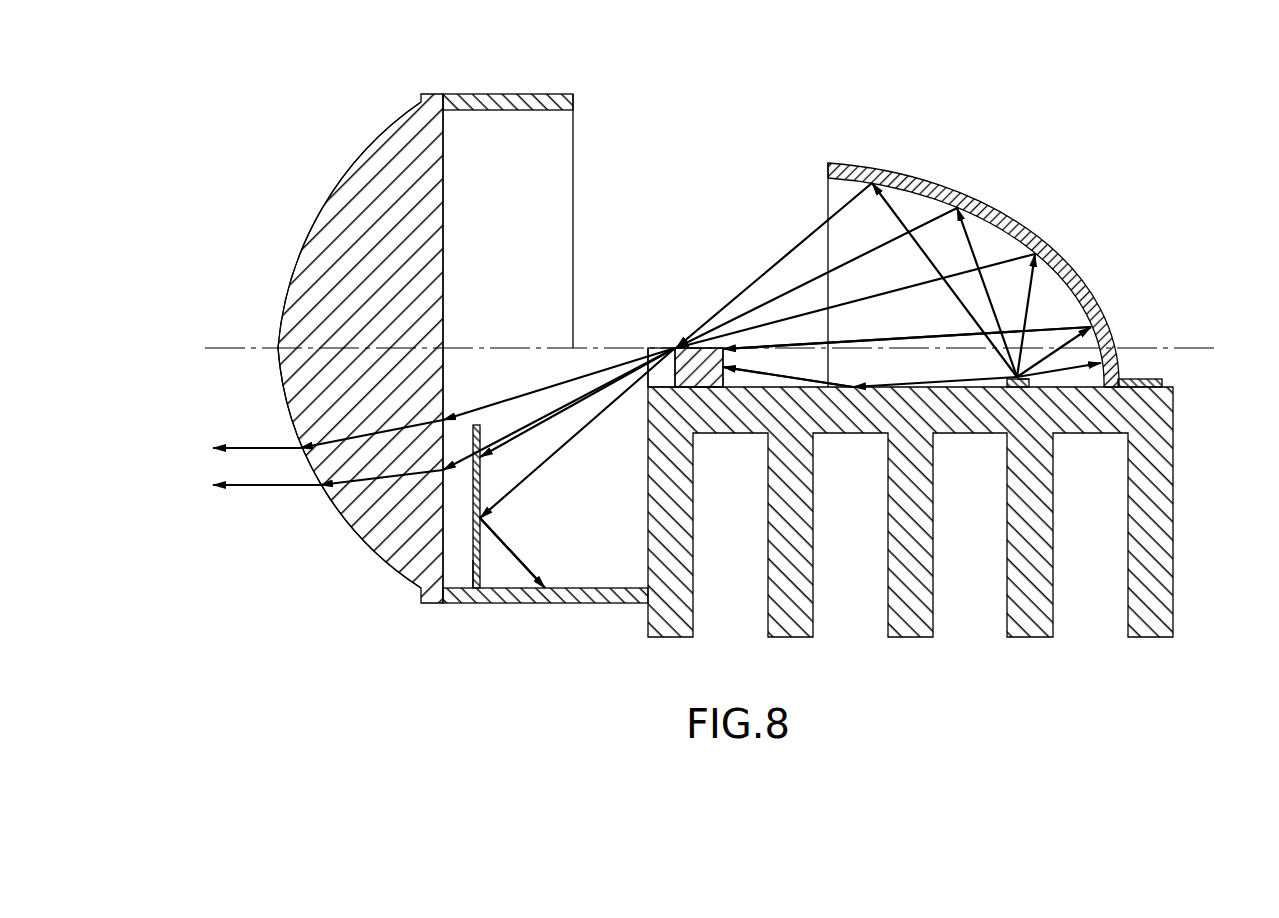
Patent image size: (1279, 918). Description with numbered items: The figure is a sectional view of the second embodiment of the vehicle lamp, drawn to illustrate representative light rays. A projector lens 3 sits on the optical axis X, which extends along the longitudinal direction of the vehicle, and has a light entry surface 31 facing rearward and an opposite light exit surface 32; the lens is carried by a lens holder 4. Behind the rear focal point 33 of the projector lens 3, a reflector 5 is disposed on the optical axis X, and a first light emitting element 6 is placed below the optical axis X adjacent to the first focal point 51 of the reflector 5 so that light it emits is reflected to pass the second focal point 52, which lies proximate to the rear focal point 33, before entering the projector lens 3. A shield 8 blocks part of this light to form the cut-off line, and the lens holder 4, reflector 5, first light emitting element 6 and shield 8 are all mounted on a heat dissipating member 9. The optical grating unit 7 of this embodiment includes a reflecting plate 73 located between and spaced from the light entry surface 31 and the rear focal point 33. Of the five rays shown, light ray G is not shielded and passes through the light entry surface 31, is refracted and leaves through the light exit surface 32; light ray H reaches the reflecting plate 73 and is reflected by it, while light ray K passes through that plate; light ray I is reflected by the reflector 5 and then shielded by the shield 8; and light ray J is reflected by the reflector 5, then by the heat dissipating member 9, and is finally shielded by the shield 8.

The projector lens 3 is at (401, 113).
The light entry surface 31 is at (445, 113).
The light exit surface 32 is at (343, 517).
The rear focal point 33 is at (716, 347).
The lens holder 4 is at (540, 90).
The reflector 5 is at (971, 194).
The first focal point 51 is at (1030, 389).
The second focal point 52 is at (678, 352).
The first light emitting element 6 is at (1038, 380).
The optical grating unit 7 is at (487, 562).
The reflecting plate 73 is at (475, 568).
The shield 8 is at (665, 384).
The heat dissipating member 9 is at (1182, 576).
The optical axis X is at (726, 351).
The light ray G is at (248, 447).
The light ray K is at (242, 488).
The light ray H is at (538, 474).
The light ray I is at (953, 338).
The light ray J is at (756, 367).